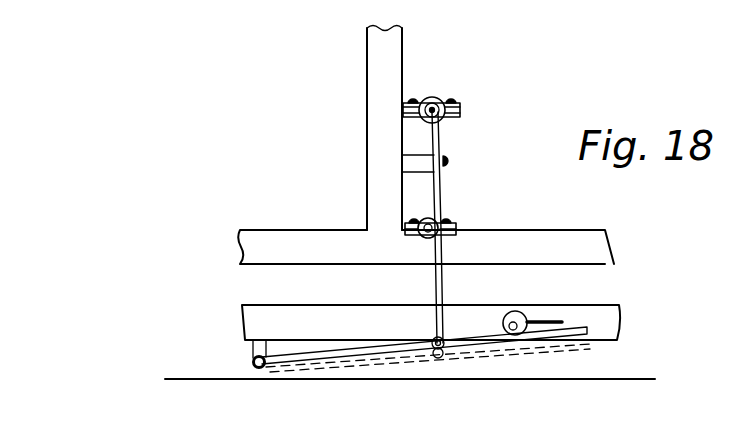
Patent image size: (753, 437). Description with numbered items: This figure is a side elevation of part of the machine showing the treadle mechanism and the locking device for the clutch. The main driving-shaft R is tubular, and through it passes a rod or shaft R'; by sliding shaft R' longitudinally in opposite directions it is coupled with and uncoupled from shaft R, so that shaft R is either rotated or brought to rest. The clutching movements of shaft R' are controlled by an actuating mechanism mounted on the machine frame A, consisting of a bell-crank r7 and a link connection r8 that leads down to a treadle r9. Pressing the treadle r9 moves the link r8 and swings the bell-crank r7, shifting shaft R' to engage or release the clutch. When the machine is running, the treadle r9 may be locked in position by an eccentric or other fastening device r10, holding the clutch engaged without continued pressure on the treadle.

The frame/beam A is at (426, 230).
The main driving-shaft R is at (453, 91).
The rod or shaft R' is at (372, 118).
The bell-crank r7 is at (438, 138).
The link connection r8 is at (442, 283).
The treadle r9 is at (383, 350).
The eccentric or other fastening device r10 is at (517, 312).